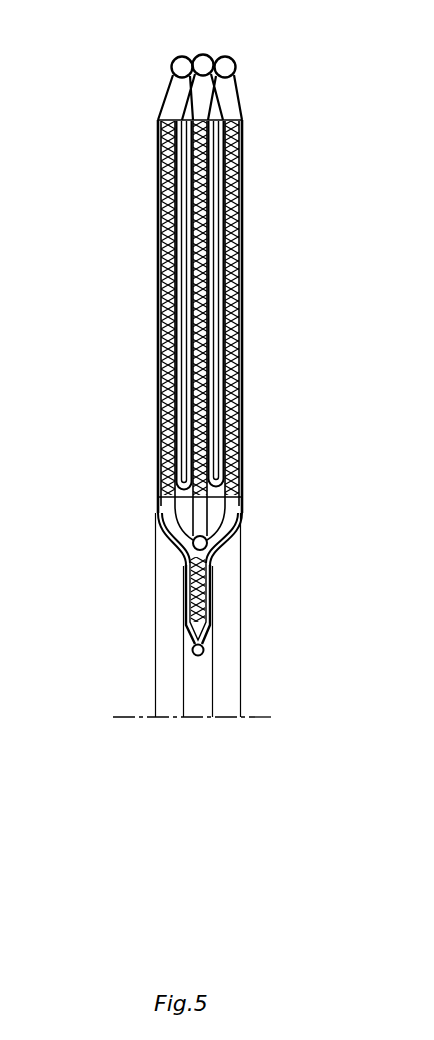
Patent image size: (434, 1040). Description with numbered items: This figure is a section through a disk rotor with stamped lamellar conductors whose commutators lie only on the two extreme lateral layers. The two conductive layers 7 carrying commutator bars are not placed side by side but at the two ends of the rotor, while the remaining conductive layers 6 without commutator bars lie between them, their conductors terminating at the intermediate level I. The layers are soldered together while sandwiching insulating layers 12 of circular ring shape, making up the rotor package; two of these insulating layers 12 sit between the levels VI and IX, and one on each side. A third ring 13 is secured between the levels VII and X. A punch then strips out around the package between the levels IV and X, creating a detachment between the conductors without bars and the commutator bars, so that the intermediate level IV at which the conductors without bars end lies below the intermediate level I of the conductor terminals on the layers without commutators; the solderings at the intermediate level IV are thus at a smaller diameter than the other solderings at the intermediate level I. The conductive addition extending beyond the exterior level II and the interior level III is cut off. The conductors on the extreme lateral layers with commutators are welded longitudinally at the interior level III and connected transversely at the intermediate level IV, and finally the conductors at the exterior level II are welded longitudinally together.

The exterior level II is at (177, 56).
The level VI is at (243, 120).
The insulating layers 12 is at (238, 233).
The conductive layers without commutator bars 6 is at (227, 293).
The conductive layers with commutators 7 is at (242, 332).
The intermediate level I is at (163, 487).
The level IX is at (242, 498).
The intermediate level IV is at (178, 553).
The level X is at (222, 558).
The third ring 13 is at (205, 603).
The level VII is at (210, 623).
The interior level III is at (192, 653).